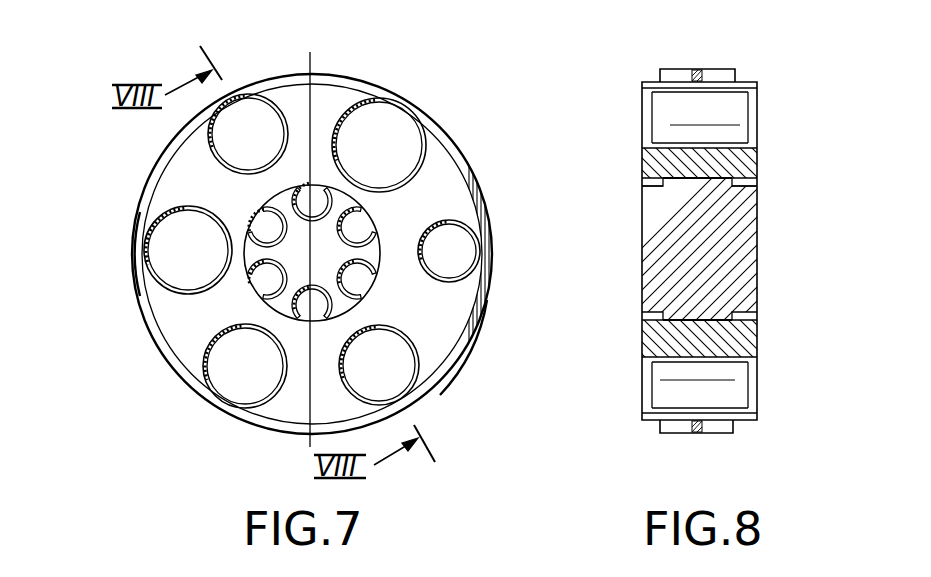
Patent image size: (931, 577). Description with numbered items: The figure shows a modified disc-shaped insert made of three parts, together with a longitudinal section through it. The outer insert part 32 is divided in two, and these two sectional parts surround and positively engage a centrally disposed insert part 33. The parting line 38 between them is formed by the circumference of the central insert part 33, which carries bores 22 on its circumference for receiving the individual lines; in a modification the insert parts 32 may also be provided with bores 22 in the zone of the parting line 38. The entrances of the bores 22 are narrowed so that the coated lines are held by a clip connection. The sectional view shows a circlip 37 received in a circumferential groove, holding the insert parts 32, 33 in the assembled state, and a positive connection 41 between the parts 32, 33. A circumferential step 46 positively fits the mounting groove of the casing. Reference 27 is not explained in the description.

In FIG. 7, the bores 22 is at (245, 112).
In FIG. 7, the flute 27 is at (170, 245).
In FIG. 7, the insert part 32 is at (292, 102).
In FIG. 7, the insert part 33 is at (464, 340).
In FIG. 7, the parting line 38 is at (380, 233).
In FIG. 8, the positive connection 41 is at (754, 189).
In FIG. 8, the step 46 is at (729, 72).
In FIG. 8, the circlip 37 is at (699, 434).